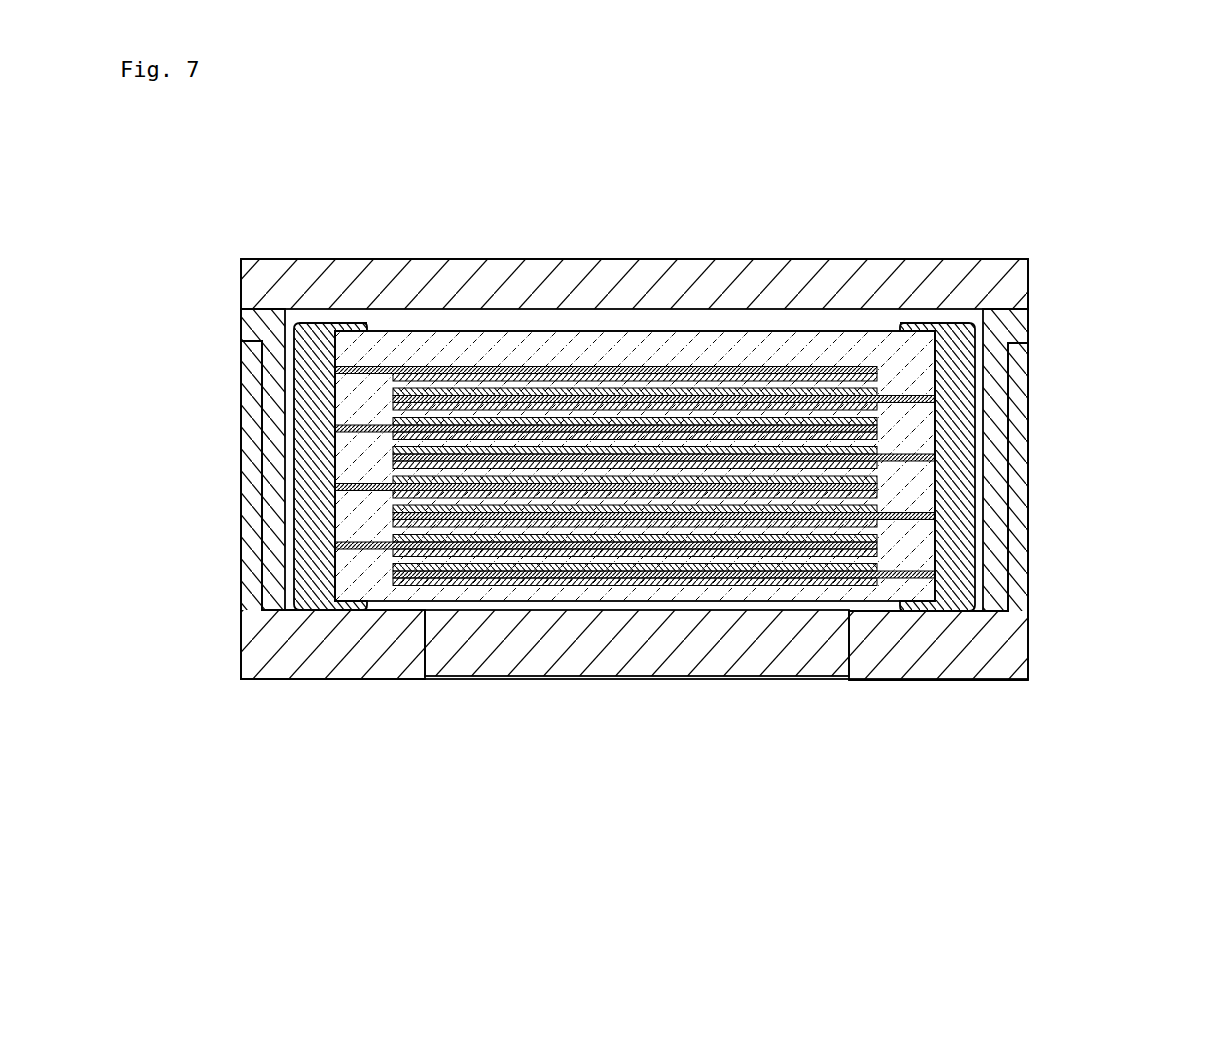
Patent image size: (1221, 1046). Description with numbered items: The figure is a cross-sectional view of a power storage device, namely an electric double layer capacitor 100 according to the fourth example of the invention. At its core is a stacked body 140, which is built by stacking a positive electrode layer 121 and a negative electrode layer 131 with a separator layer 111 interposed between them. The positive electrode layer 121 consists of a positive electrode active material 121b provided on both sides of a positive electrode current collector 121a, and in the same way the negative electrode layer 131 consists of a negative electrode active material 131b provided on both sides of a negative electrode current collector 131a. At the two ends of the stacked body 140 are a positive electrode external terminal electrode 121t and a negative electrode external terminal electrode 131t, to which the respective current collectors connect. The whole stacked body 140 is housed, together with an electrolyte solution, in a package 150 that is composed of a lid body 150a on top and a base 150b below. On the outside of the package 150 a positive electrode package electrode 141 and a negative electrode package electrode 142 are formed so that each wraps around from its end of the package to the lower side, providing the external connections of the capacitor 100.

The electric double layer capacitor 100 is at (863, 227).
The separator layer 111 is at (595, 560).
The positive electrode layer 121 is at (606, 582).
The positive electrode current collector 121a is at (454, 530).
The positive electrode active material 121b is at (505, 520).
The positive electrode external terminal electrode 121t is at (317, 602).
The negative electrode layer 131 is at (664, 594).
The negative electrode current collector 131a is at (705, 517).
The negative electrode active material 131b is at (807, 517).
The negative electrode external terminal electrode 131t is at (955, 606).
The stacked body 140 is at (622, 322).
The positive electrode package electrode 141 is at (366, 656).
The negative electrode package electrode 142 is at (891, 655).
The package 150 is at (717, 560).
The lid body 150a is at (1013, 283).
The base 150b is at (1015, 322).